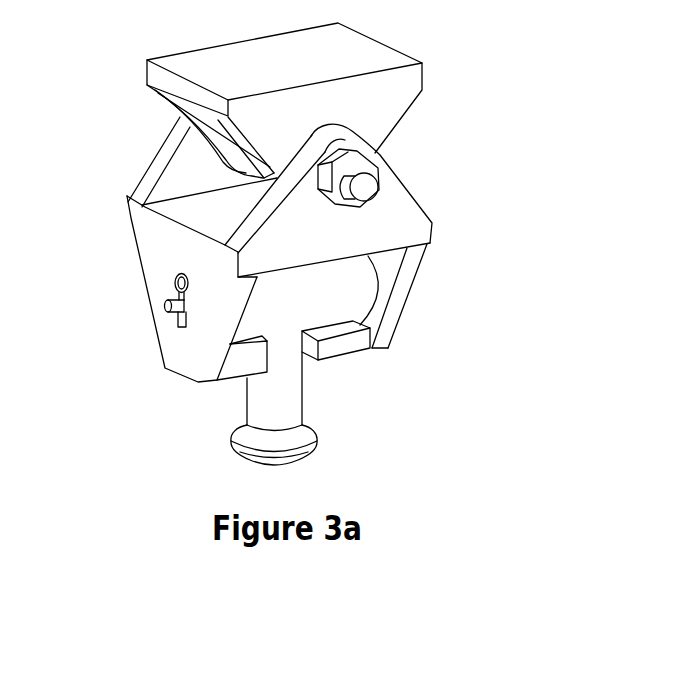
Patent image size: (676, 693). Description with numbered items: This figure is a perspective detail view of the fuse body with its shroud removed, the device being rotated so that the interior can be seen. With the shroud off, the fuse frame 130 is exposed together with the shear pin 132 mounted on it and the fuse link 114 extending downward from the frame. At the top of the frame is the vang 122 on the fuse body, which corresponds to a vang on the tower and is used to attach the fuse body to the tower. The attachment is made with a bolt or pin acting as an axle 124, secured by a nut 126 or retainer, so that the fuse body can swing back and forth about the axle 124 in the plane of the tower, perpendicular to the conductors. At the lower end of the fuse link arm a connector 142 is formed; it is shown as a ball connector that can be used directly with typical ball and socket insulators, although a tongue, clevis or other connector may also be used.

The fuse link 114 is at (300, 392).
The vang 122 is at (148, 185).
The axle 124 is at (378, 187).
The nut 126 is at (320, 196).
The fuse frame 130 is at (145, 272).
The shear pin 132 is at (162, 322).
The connector 142 is at (230, 443).